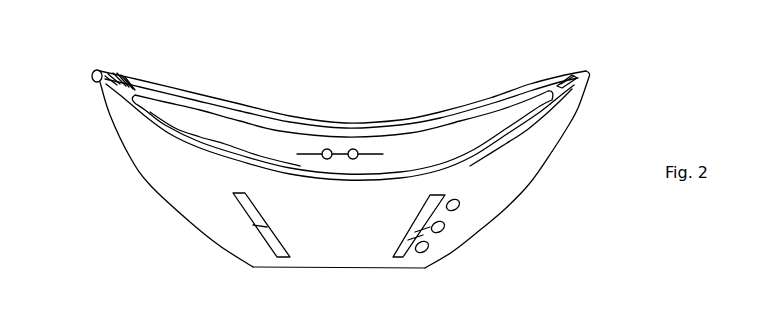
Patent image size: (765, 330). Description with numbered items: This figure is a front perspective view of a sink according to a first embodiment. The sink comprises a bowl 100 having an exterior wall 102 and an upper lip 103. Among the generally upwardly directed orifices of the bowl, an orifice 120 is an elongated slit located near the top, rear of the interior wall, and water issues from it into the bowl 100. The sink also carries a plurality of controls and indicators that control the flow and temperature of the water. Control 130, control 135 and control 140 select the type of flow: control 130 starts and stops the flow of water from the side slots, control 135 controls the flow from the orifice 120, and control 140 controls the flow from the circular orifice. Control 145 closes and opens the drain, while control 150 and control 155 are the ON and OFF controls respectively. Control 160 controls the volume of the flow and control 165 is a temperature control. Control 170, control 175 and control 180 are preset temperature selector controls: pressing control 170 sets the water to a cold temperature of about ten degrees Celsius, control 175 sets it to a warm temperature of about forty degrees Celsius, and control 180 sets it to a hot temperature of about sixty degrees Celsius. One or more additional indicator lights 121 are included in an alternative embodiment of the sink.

The bowl 100 is at (192, 223).
The exterior wall 102 is at (566, 128).
The upper lip 103 is at (533, 90).
The orifice 120 is at (343, 152).
The indicator lights 121 is at (325, 148).
The control 130 is at (102, 82).
The control 135 is at (107, 75).
The control 140 is at (112, 73).
The control 145 is at (126, 77).
The control 150 is at (562, 80).
The control 155 is at (573, 77).
The control 160 is at (263, 233).
The control 165 is at (402, 250).
The control 170 is at (460, 206).
The control 175 is at (445, 229).
The control 180 is at (429, 250).